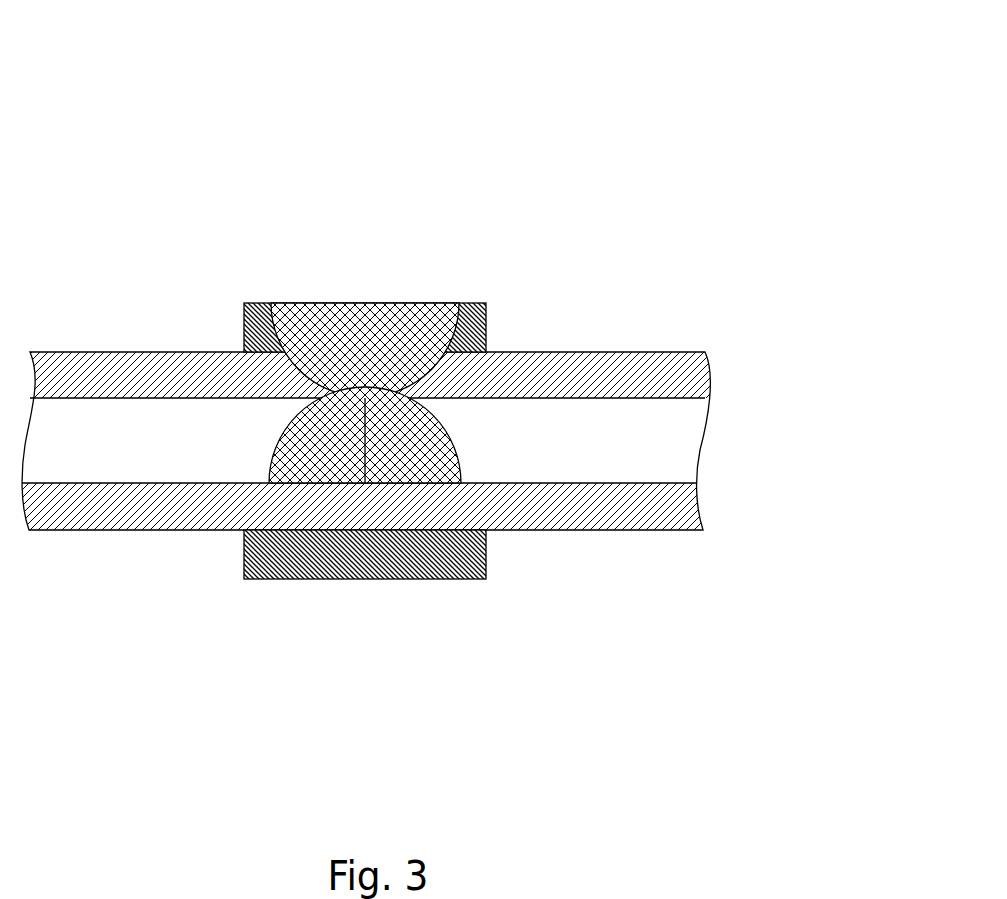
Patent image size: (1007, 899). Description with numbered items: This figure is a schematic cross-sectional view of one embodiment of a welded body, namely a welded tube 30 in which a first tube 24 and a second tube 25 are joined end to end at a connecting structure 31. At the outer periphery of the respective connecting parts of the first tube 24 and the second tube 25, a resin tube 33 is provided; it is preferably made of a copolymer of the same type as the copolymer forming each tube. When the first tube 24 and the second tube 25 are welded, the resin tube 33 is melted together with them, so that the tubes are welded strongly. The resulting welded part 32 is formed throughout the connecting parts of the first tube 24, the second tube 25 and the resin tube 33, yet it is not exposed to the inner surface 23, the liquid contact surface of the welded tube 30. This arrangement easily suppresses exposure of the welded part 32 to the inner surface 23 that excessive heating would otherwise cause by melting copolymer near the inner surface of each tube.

The inner surface 23 is at (145, 400).
The first tube 24 is at (77, 370).
The second tube 25 is at (643, 368).
The welded tube 30 is at (598, 155).
The connecting structure 31 is at (359, 248).
The welded part 32 is at (382, 305).
The resin tube 33 is at (270, 303).